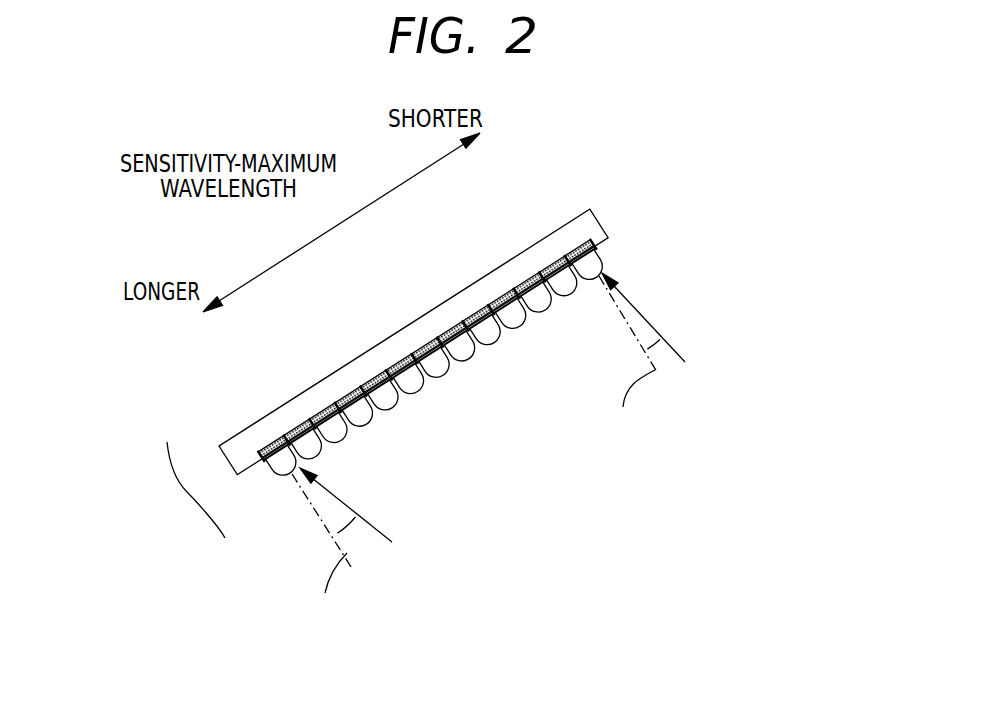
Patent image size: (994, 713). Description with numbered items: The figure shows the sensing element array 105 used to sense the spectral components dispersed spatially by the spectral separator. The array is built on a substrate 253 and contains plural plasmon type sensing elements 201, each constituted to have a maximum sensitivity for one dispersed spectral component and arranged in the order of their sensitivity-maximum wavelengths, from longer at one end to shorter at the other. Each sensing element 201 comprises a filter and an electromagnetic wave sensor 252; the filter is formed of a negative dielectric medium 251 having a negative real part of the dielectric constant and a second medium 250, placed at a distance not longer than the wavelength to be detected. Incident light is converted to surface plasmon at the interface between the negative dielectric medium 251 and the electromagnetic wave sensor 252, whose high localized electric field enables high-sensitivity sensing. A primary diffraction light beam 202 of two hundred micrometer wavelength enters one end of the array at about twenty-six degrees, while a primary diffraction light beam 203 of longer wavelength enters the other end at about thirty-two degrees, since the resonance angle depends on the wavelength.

The sensing element array 105 is at (187, 492).
The sensing element 201 is at (600, 253).
The primary diffraction light beam 202 is at (670, 347).
The primary diffraction light beam 203 is at (380, 535).
The second medium 250 is at (490, 347).
The negative dielectric medium 251 is at (590, 223).
The electromagnetic wave sensor 252 is at (577, 242).
The substrate 253 is at (535, 255).